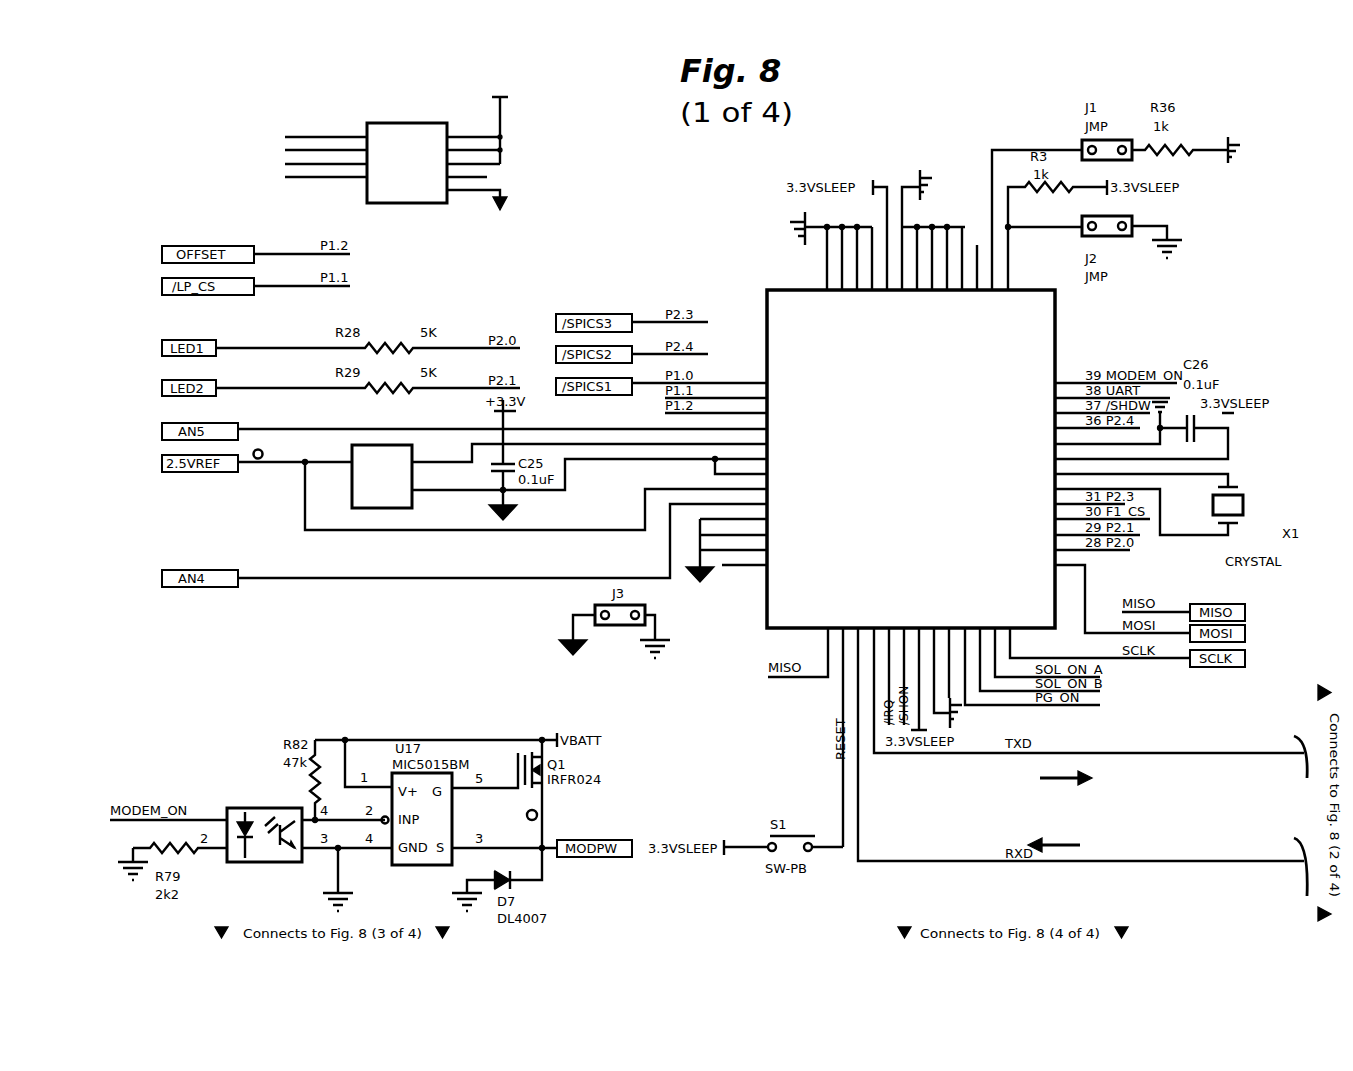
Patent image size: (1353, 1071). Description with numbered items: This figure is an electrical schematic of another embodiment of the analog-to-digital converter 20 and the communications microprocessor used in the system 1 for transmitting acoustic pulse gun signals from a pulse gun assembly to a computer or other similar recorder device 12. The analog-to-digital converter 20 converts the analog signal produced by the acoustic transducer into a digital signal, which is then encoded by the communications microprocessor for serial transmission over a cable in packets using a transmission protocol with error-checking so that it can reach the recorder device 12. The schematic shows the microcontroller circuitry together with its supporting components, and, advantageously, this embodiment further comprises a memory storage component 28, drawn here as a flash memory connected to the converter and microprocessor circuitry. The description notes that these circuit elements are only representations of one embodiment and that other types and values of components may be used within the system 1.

The memory storage component 28 is at (535, 150).
The analog-to-digital converter 20 is at (1200, 302).
The system 1 is at (544, 477).
The recorder device 12 is at (258, 819).